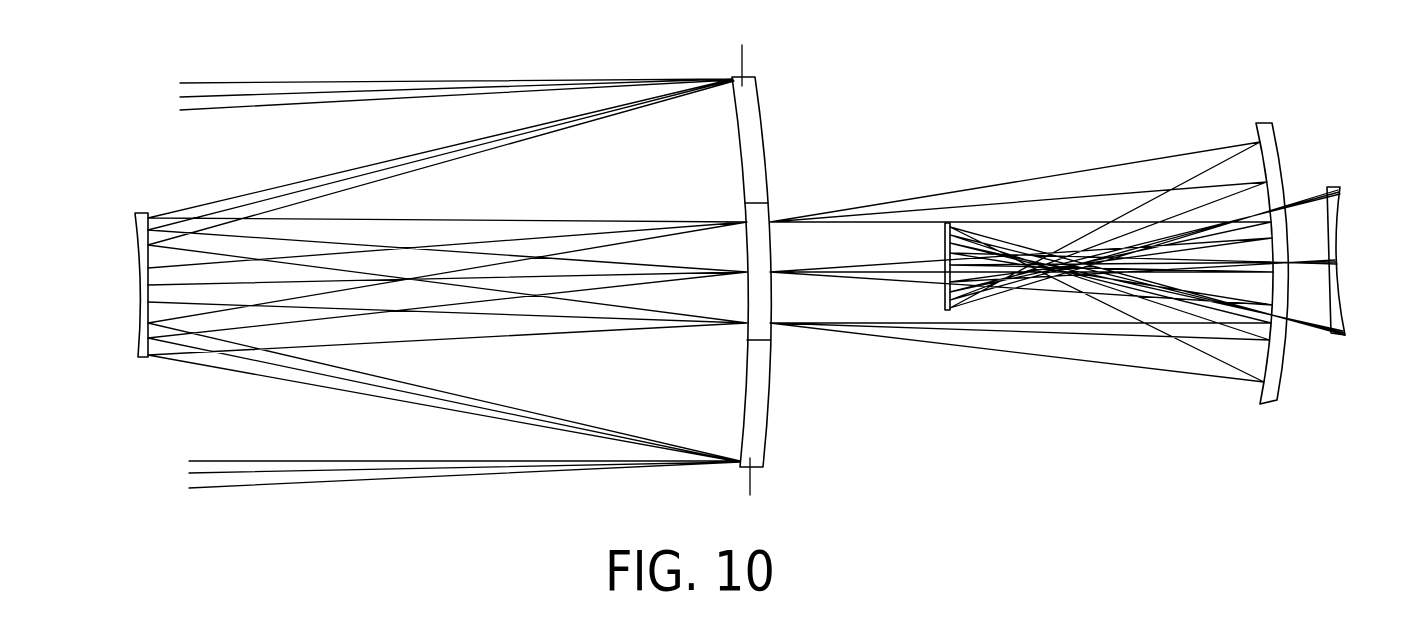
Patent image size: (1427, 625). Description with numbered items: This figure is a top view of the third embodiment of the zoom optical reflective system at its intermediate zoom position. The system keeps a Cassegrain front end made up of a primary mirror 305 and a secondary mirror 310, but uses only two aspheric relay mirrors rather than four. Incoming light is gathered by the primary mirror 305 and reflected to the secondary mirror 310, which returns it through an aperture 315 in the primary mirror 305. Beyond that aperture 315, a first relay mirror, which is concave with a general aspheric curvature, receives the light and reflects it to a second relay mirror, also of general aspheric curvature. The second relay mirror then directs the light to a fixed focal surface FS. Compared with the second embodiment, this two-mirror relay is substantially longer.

The primary mirror 305 is at (762, 118).
The secondary mirror 310 is at (137, 318).
The aperture 315 is at (760, 335).
The fixed focal surface FS is at (1340, 195).